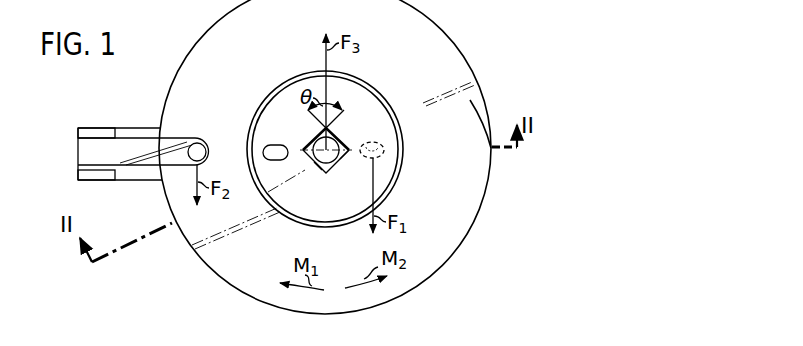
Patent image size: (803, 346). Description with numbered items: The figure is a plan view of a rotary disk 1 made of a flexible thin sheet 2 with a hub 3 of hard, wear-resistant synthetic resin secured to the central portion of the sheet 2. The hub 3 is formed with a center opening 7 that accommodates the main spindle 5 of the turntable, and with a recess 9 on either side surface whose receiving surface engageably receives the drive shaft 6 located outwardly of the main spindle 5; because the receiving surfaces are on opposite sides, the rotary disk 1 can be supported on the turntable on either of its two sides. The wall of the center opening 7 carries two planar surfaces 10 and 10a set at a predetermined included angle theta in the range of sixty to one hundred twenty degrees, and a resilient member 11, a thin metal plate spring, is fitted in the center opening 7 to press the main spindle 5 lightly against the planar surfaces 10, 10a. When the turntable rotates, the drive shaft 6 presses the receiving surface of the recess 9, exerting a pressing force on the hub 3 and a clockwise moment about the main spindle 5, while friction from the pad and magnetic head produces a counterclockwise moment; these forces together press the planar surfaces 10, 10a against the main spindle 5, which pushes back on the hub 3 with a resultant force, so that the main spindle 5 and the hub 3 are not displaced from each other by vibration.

The rotary disk 1 is at (458, 50).
The flexible thin sheet 2 is at (476, 112).
The hub 3 is at (378, 104).
The main spindle 5 is at (318, 139).
The drive shaft 6 is at (386, 149).
The center opening 7 is at (343, 156).
The recess 9 is at (389, 125).
The planar surface 10 is at (300, 150).
The planar surface 10a is at (363, 146).
The resilient member 11 is at (322, 169).